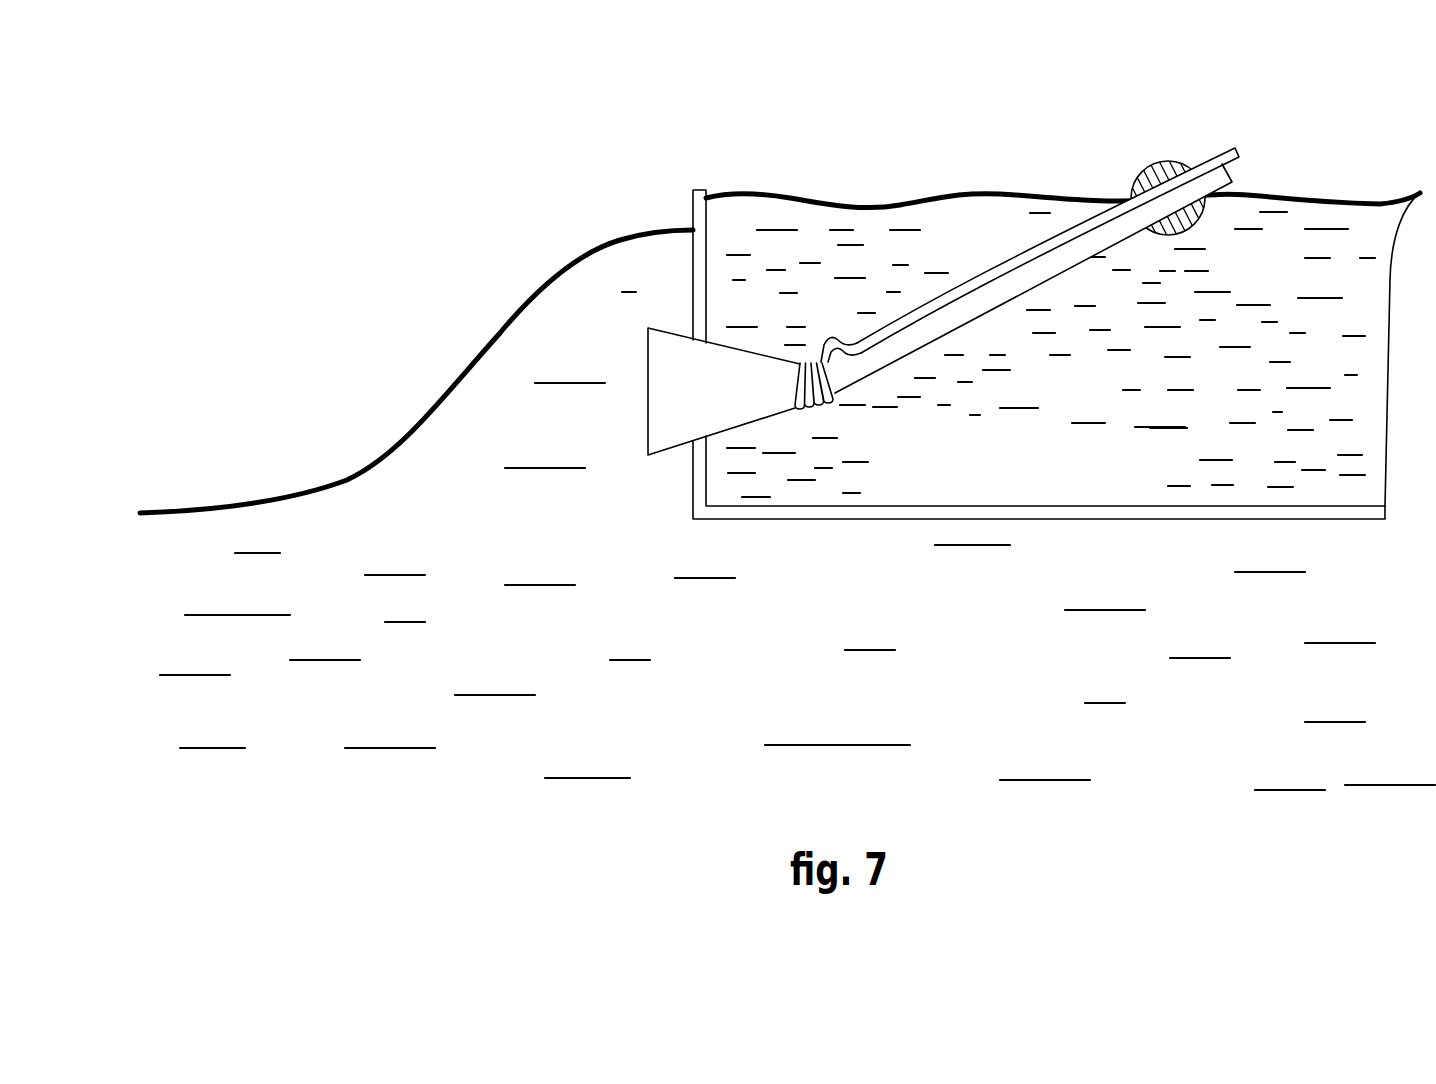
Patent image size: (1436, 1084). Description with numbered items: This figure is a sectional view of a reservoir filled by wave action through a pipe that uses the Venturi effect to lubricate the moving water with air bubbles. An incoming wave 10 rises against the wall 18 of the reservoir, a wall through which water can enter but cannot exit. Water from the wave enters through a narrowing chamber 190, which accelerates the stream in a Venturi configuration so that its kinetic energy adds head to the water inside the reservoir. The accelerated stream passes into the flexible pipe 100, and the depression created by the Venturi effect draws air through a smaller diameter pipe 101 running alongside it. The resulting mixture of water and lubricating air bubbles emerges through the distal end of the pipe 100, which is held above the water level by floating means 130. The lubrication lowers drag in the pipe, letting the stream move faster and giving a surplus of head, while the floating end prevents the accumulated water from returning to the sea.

The incoming wave 10 is at (500, 330).
The wall 18 is at (693, 220).
The narrowing chamber 190 is at (648, 412).
The flexible pipe 100 is at (967, 307).
The smaller diameter pipe 101 is at (958, 285).
The floating means 130 is at (1148, 168).